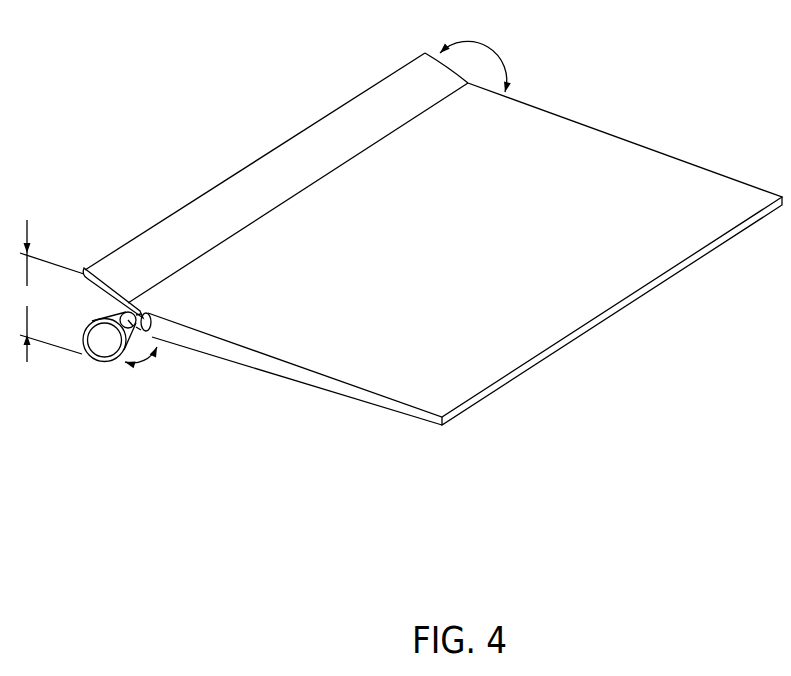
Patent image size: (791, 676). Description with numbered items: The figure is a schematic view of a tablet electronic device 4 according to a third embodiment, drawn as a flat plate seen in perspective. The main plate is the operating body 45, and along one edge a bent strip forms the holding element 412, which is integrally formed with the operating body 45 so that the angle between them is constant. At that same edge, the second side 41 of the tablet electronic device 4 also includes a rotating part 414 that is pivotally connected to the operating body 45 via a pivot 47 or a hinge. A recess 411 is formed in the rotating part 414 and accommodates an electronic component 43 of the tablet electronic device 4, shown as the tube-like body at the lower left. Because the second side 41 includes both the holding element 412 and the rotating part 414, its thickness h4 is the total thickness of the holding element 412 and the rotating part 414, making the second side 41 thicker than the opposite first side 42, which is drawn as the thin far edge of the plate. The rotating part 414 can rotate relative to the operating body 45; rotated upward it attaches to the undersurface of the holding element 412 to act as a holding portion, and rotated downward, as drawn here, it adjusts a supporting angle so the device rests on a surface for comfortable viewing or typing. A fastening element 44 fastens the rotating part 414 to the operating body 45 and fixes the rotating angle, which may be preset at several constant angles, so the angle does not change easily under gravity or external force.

The tablet electronic device 4 is at (200, 105).
The second side 41 is at (102, 182).
The recess 411 is at (91, 356).
The holding element 412 is at (143, 262).
The rotating part 414 is at (98, 302).
The first side 42 is at (645, 291).
The electronic component 43 is at (105, 352).
The fastening element 44 is at (151, 329).
The operating body 45 is at (665, 173).
The pivot 47 is at (134, 315).
The thickness h4 is at (50, 291).